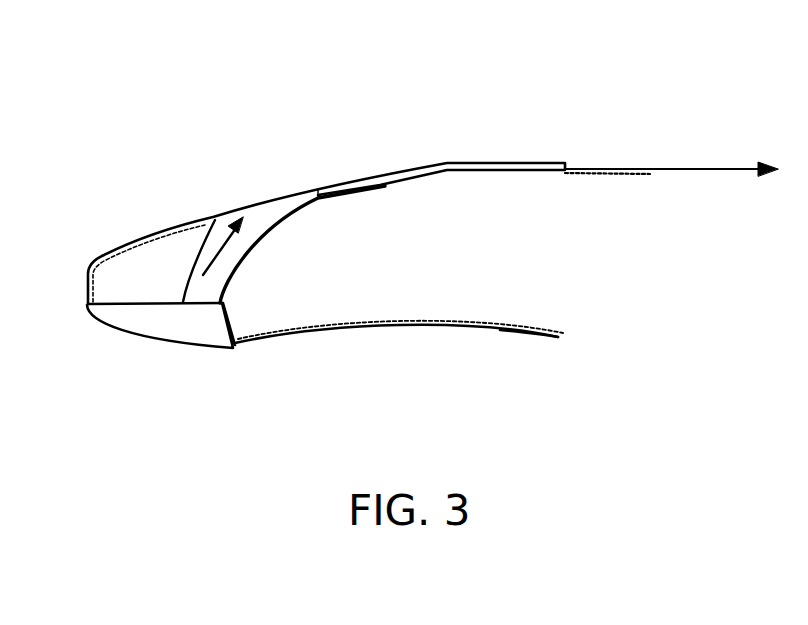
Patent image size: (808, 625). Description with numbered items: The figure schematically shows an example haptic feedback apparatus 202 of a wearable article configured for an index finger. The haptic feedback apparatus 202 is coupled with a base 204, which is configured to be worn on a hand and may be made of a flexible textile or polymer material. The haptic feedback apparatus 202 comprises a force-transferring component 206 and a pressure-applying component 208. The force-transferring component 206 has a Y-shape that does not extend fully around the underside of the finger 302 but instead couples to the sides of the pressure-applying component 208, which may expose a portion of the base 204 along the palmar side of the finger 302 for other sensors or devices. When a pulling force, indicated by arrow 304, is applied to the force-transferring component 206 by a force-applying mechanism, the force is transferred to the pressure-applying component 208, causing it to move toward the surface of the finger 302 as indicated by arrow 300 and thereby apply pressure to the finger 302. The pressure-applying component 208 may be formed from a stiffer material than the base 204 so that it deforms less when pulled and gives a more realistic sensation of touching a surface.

The haptic feedback apparatus 202 is at (432, 206).
The base 204 is at (375, 330).
The force-transferring component 206 is at (390, 172).
The pressure-applying component 208 is at (205, 352).
The arrow indicating movement of the pressure-applying component 300 is at (215, 260).
The finger 302 is at (512, 328).
The arrow indicating pulling force 304 is at (671, 162).